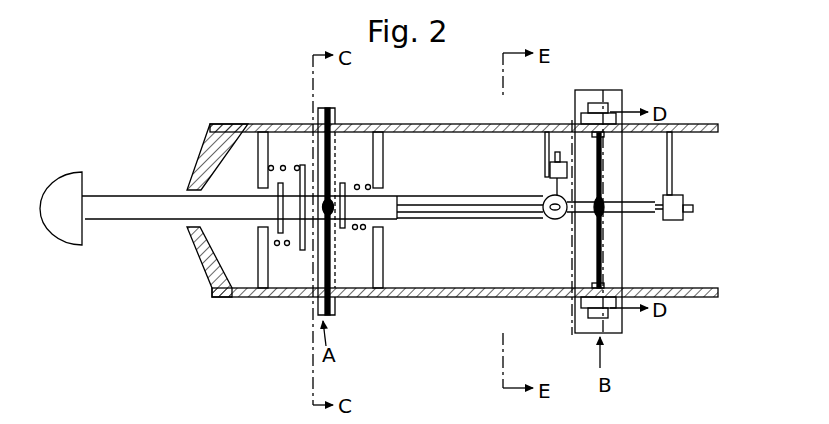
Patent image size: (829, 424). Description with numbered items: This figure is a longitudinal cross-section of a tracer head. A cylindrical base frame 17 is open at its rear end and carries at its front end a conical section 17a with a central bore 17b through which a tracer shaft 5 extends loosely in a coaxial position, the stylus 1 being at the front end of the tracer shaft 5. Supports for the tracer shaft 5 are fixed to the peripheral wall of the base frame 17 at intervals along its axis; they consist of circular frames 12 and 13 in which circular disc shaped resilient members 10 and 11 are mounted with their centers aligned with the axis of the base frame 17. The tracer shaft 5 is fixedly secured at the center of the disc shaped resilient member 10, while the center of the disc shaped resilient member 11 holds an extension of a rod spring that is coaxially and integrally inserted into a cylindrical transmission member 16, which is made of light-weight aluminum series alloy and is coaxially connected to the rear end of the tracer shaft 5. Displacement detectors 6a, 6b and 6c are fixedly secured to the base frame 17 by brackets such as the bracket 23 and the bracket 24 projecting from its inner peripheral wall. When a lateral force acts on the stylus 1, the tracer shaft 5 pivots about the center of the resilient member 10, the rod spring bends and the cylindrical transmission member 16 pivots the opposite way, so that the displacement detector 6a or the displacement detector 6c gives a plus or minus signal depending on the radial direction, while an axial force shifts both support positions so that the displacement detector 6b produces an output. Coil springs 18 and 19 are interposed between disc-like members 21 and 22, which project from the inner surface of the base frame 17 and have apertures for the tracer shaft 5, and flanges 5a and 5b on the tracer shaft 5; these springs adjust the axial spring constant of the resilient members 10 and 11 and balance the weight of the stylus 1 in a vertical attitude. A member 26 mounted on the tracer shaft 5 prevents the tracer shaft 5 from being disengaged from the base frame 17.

The stylus 1 is at (58, 232).
The tracer shaft 5 is at (134, 196).
The flange 5a is at (300, 247).
The flange 5b is at (350, 203).
The displacement detector 6a is at (548, 170).
The displacement detector 6b is at (682, 198).
The displacement detector 6c is at (553, 222).
The disc shaped resilient member 10 is at (331, 250).
The disc shaped resilient member 11 is at (602, 256).
The circular frame 12 is at (331, 113).
The circular frame 13 is at (604, 287).
The cylindrical transmission member 16 is at (418, 194).
The cylindrical base frame 17 is at (457, 124).
The conical section 17a is at (208, 152).
The bore 17b is at (186, 228).
The coil spring 18 is at (284, 166).
The coil spring 19 is at (359, 185).
The disc-like member 21 is at (257, 177).
The disc-like member 22 is at (392, 136).
The bracket 23 is at (540, 134).
The bracket 24 is at (674, 134).
The disengagement preventing member 26 is at (280, 201).